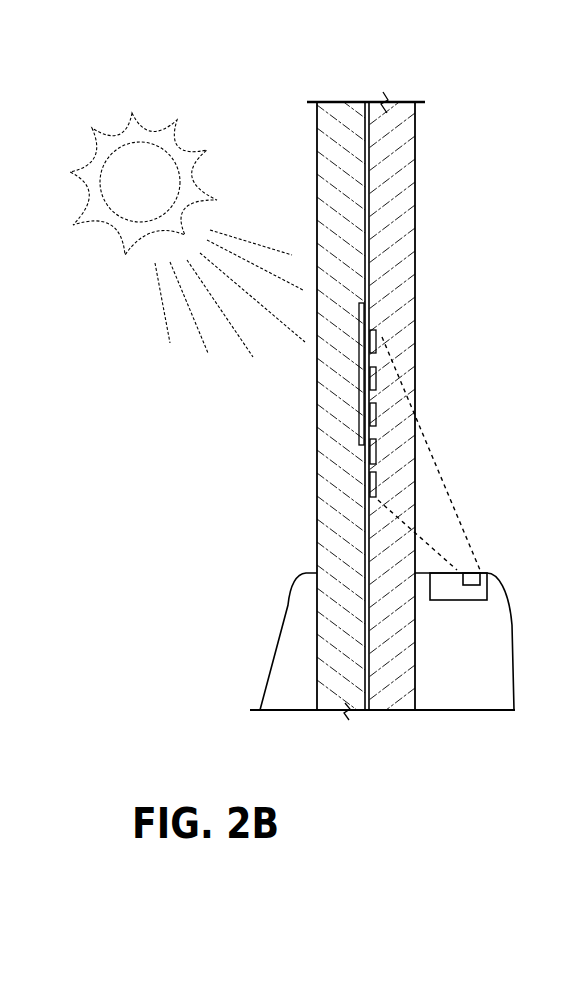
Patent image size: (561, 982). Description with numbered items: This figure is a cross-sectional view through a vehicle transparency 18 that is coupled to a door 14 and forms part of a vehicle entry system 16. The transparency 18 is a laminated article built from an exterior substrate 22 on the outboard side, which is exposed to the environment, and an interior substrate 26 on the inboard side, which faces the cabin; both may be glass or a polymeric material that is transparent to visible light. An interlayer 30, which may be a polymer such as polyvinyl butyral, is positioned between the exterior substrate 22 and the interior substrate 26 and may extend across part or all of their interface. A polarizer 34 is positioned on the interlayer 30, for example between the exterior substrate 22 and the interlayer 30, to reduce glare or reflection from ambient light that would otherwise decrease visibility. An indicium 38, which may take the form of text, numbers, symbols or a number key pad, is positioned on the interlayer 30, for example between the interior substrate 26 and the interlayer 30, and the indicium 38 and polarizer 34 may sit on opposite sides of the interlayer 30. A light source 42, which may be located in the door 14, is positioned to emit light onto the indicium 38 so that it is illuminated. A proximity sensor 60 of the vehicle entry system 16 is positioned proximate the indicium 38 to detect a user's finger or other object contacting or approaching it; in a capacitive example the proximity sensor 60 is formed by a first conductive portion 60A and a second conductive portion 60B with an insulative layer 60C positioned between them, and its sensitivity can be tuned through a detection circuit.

The door 14 is at (288, 653).
The vehicle entry system 16 is at (478, 422).
The transparency 18 is at (405, 95).
The exterior substrate 22 is at (327, 138).
The interior substrate 26 is at (403, 138).
The interlayer 30 is at (365, 102).
The polarizer 34 is at (362, 377).
The indicium 38 is at (377, 373).
The light source 42 is at (481, 573).
The proximity sensor 60 is at (373, 318).
The first conductive portion 60A is at (370, 341).
The second conductive portion 60B is at (370, 418).
The insulative layer 60C is at (370, 487).